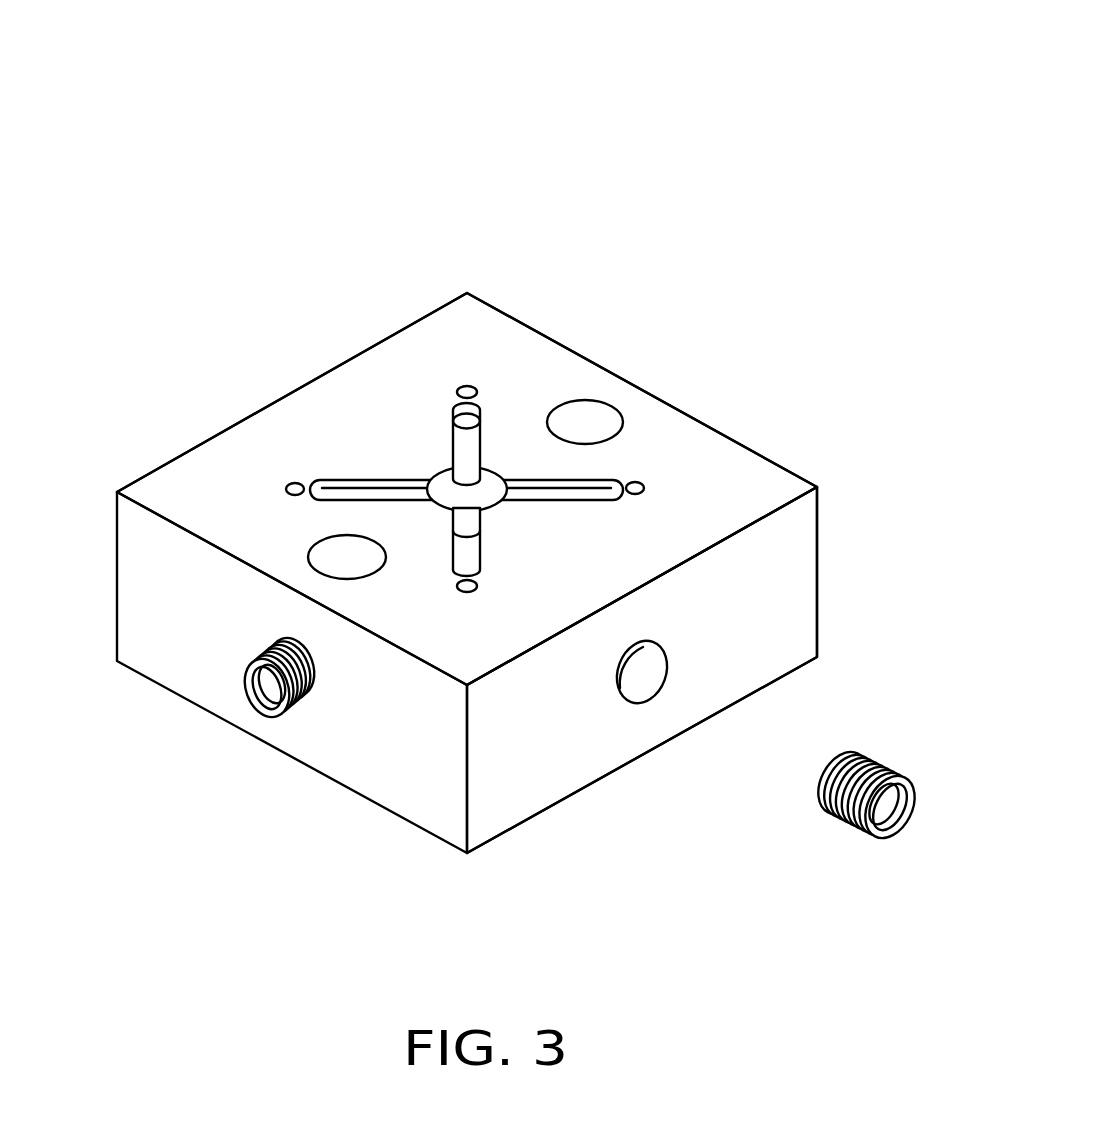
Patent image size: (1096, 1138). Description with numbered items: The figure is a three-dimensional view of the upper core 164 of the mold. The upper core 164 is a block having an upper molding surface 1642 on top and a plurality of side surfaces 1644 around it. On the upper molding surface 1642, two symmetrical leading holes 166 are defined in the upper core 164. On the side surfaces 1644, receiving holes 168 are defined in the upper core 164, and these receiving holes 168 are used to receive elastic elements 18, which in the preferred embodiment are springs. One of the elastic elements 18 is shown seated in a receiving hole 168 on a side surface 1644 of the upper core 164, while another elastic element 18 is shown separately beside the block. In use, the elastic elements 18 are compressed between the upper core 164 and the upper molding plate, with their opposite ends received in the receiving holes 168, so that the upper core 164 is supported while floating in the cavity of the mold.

The upper core 164 is at (530, 168).
The leading holes 166 is at (588, 420).
The upper molding surface 1642 is at (715, 478).
The side surfaces 1644 is at (768, 587).
The receiving holes 168 is at (640, 685).
The elastic elements 18 is at (243, 673).